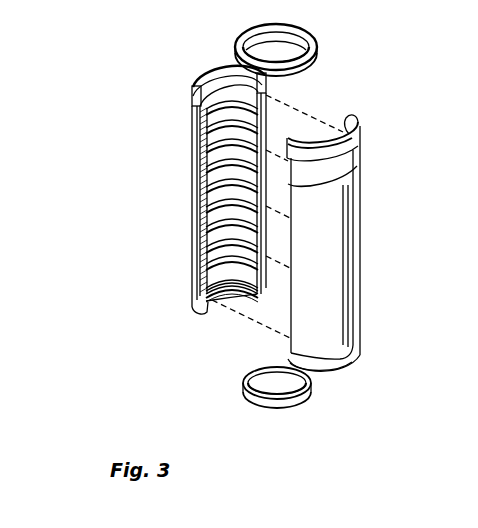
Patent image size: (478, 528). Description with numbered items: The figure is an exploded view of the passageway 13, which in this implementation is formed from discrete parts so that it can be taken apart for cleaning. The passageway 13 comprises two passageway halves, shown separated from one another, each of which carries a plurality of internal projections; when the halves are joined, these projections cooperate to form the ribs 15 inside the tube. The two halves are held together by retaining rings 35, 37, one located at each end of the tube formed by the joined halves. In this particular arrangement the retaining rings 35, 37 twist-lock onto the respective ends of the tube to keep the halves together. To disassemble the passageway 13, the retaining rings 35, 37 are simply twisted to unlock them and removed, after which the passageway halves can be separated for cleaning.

The passageway 13 is at (150, 70).
The ribs 15 is at (222, 208).
The retaining ring 35 is at (308, 58).
The retaining ring 37 is at (283, 398).